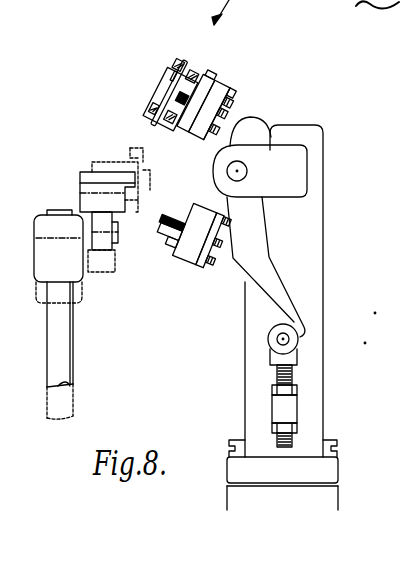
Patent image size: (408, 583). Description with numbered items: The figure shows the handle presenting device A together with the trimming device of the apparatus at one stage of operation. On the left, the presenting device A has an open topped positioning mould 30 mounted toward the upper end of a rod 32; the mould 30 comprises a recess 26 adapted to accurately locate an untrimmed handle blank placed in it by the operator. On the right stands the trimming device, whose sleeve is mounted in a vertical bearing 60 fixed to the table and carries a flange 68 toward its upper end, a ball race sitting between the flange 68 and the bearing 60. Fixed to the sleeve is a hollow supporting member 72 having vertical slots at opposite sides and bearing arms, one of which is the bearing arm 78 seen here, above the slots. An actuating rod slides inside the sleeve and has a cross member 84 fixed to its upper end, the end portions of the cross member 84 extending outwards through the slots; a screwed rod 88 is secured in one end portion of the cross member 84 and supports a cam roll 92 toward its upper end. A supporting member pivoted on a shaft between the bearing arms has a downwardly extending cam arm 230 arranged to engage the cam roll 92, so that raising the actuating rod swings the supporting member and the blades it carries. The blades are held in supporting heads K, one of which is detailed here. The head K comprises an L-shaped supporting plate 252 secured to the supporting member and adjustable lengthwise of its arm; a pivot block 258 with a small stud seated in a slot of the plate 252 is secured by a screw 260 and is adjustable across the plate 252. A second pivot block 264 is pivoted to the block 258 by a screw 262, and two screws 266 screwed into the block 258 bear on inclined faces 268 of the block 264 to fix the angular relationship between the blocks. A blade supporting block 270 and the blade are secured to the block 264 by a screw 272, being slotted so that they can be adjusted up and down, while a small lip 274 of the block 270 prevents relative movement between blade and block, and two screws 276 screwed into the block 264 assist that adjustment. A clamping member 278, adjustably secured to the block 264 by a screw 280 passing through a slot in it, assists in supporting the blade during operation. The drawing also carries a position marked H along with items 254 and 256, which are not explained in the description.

The recess 26 is at (78, 185).
The open topped positioning mould 30 is at (87, 198).
The rod 32 is at (70, 330).
The vertical bearing 60 is at (235, 495).
The flange 68 is at (237, 465).
The hollow supporting member 72 is at (320, 217).
The bearing arm 78 is at (300, 177).
The cross member 84 is at (287, 410).
The screwed rod 88 is at (292, 373).
The cam roll 92 is at (299, 338).
The cam arm 230 is at (265, 258).
The L-shaped supporting plate 252 is at (242, 122).
The bolt 254 is at (213, 125).
The bolt 256 is at (238, 107).
The pivot block 258 is at (188, 133).
The screw 260 is at (224, 92).
The screw 262 is at (200, 77).
The pivot block 264 is at (163, 125).
The screws 266 is at (263, 88).
The inclined faces 268 is at (224, 84).
The blade supporting block 270 is at (186, 140).
The screw 272 is at (160, 103).
The lip 274 is at (166, 93).
The screws 276 is at (190, 66).
The clamping member 278 is at (184, 63).
The screw 280 is at (174, 76).
The presenting device A is at (160, 123).
The position H is at (117, 163).
The supporting head K is at (160, 277).